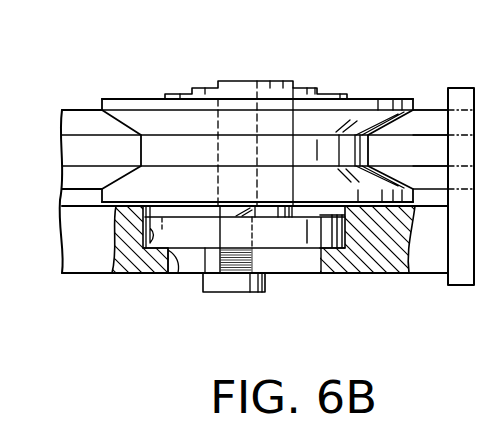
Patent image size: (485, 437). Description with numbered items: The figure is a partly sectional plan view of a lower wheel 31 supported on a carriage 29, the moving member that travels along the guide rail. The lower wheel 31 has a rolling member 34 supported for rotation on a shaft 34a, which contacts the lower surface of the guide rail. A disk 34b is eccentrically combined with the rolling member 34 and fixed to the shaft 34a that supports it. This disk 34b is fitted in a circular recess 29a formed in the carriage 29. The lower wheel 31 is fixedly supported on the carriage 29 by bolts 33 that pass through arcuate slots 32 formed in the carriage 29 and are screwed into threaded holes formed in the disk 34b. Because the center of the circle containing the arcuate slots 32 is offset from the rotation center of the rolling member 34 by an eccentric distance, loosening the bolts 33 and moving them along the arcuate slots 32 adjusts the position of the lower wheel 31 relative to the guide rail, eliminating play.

The carriage 29 is at (428, 262).
The circular recess 29a is at (125, 268).
The lower wheel 31 is at (209, 73).
The arcuate slots 32 is at (178, 275).
The bolts 33 is at (230, 280).
The rolling member 34 is at (337, 124).
The shaft 34a is at (294, 133).
The disk 34b is at (292, 235).